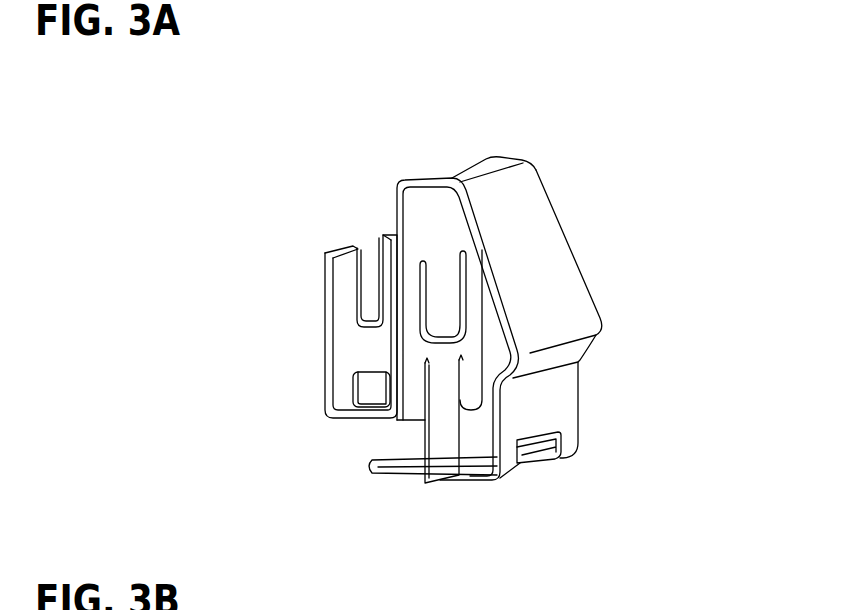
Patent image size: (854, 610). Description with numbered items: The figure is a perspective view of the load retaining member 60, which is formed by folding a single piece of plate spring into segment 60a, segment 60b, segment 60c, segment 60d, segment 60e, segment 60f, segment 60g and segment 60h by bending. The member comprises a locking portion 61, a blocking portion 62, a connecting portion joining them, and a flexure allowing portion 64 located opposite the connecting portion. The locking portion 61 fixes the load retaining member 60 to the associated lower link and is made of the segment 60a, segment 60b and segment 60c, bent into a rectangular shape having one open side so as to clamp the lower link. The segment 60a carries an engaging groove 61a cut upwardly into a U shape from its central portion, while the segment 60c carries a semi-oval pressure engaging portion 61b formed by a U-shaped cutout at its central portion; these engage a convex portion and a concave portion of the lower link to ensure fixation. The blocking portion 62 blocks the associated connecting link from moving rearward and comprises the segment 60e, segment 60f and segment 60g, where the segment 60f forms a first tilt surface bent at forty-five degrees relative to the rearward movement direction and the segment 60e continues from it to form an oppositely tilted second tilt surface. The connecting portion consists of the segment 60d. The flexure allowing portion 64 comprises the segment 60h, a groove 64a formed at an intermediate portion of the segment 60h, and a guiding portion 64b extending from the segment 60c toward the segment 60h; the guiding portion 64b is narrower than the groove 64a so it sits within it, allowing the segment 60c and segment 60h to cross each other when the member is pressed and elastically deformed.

The load retaining member 60 is at (292, 82).
The locking portion 61 is at (203, 109).
The segment 60a is at (343, 312).
The segment 60b is at (343, 430).
The segment 60c is at (410, 207).
The segment 60d is at (497, 158).
The segment 60e is at (572, 278).
The segment 60f is at (572, 350).
The segment 60g is at (575, 422).
The segment 60h is at (453, 480).
The engaging groove 61a is at (363, 247).
The pressure engaging portion 61b is at (437, 277).
The blocking portion 62 is at (795, 257).
The flexure allowing portion 64 is at (587, 560).
The groove 64a is at (530, 458).
The guiding portion 64b is at (420, 435).